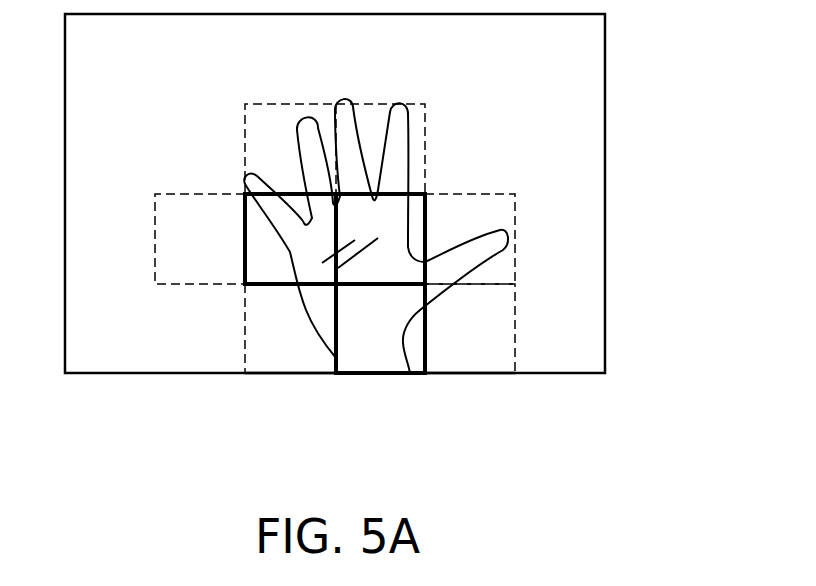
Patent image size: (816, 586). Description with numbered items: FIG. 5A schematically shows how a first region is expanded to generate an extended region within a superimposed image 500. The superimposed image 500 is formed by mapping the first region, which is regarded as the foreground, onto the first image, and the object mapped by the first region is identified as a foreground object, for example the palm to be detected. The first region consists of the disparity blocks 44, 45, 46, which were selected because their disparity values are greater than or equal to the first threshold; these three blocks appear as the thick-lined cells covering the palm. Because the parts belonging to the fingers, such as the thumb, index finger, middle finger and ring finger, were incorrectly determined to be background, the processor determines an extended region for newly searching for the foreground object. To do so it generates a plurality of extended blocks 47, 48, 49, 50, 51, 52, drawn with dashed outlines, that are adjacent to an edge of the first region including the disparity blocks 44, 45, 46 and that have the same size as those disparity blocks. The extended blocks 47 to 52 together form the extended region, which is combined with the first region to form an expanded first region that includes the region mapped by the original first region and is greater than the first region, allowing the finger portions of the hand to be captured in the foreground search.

The disparity block 44 is at (248, 258).
The disparity block 45 is at (413, 222).
The disparity block 46 is at (375, 350).
The extended block 47 is at (175, 255).
The extended block 48 is at (278, 128).
The extended block 49 is at (373, 128).
The extended block 50 is at (502, 270).
The extended block 51 is at (502, 338).
The extended block 52 is at (290, 350).
The superimposed image 500 is at (730, 460).